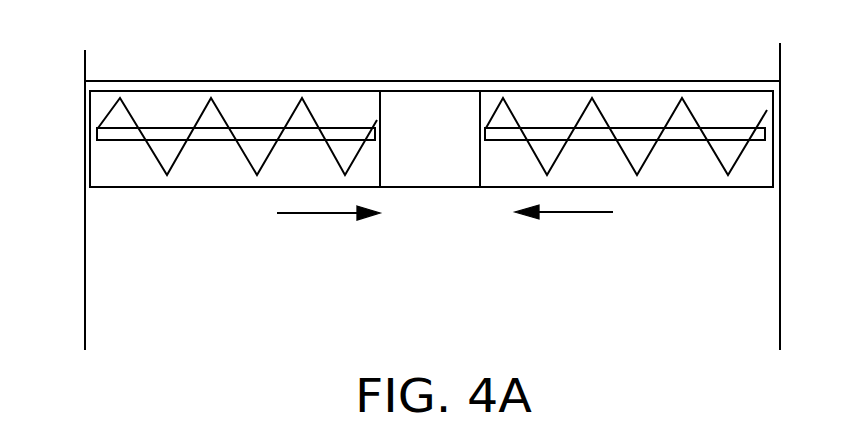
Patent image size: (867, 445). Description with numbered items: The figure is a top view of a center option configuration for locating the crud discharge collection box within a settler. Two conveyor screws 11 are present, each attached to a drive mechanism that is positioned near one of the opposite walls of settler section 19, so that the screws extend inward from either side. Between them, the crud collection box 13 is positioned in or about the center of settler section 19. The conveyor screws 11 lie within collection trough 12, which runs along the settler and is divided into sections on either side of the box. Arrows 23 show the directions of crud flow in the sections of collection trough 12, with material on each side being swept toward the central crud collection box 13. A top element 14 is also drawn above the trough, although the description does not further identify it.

The conveyor screw 11 is at (131, 108).
The collection trough 12 is at (774, 168).
The crud collection box 13 is at (416, 89).
The top plate 14 is at (680, 81).
The settler section 19 is at (85, 235).
The arrow 23 is at (309, 214).